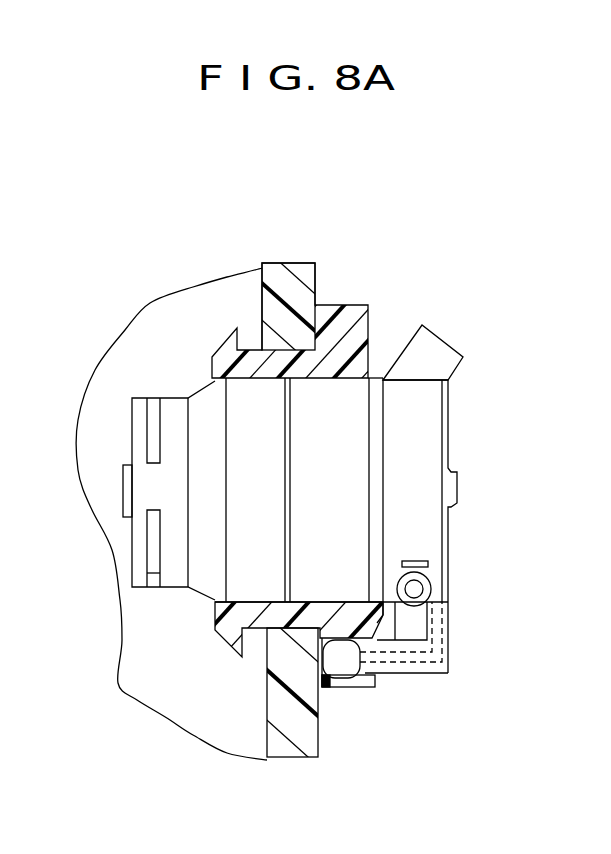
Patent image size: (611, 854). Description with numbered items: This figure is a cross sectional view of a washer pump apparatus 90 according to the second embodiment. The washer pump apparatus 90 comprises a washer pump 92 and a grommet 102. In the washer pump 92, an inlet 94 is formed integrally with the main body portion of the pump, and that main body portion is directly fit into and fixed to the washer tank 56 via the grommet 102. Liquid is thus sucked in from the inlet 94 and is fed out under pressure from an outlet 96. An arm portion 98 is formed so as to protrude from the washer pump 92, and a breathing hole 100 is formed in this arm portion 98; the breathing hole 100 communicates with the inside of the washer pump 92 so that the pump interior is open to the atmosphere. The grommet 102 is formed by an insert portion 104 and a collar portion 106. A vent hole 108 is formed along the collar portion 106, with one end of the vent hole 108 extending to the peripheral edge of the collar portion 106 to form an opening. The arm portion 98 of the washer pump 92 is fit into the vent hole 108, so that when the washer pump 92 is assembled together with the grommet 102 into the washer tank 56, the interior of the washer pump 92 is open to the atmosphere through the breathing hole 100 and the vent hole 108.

The washer tank 56 is at (318, 757).
The washer pump apparatus 90 is at (365, 277).
The washer pump 92 is at (450, 446).
The inlet 94 is at (123, 497).
The outlet 96 is at (418, 593).
The arm portion 98 is at (447, 675).
The breathing hole 100 is at (410, 662).
The grommet 102 is at (321, 474).
The insert portion 104 is at (253, 350).
The collar portion 106 is at (334, 305).
The vent hole 108 is at (345, 667).